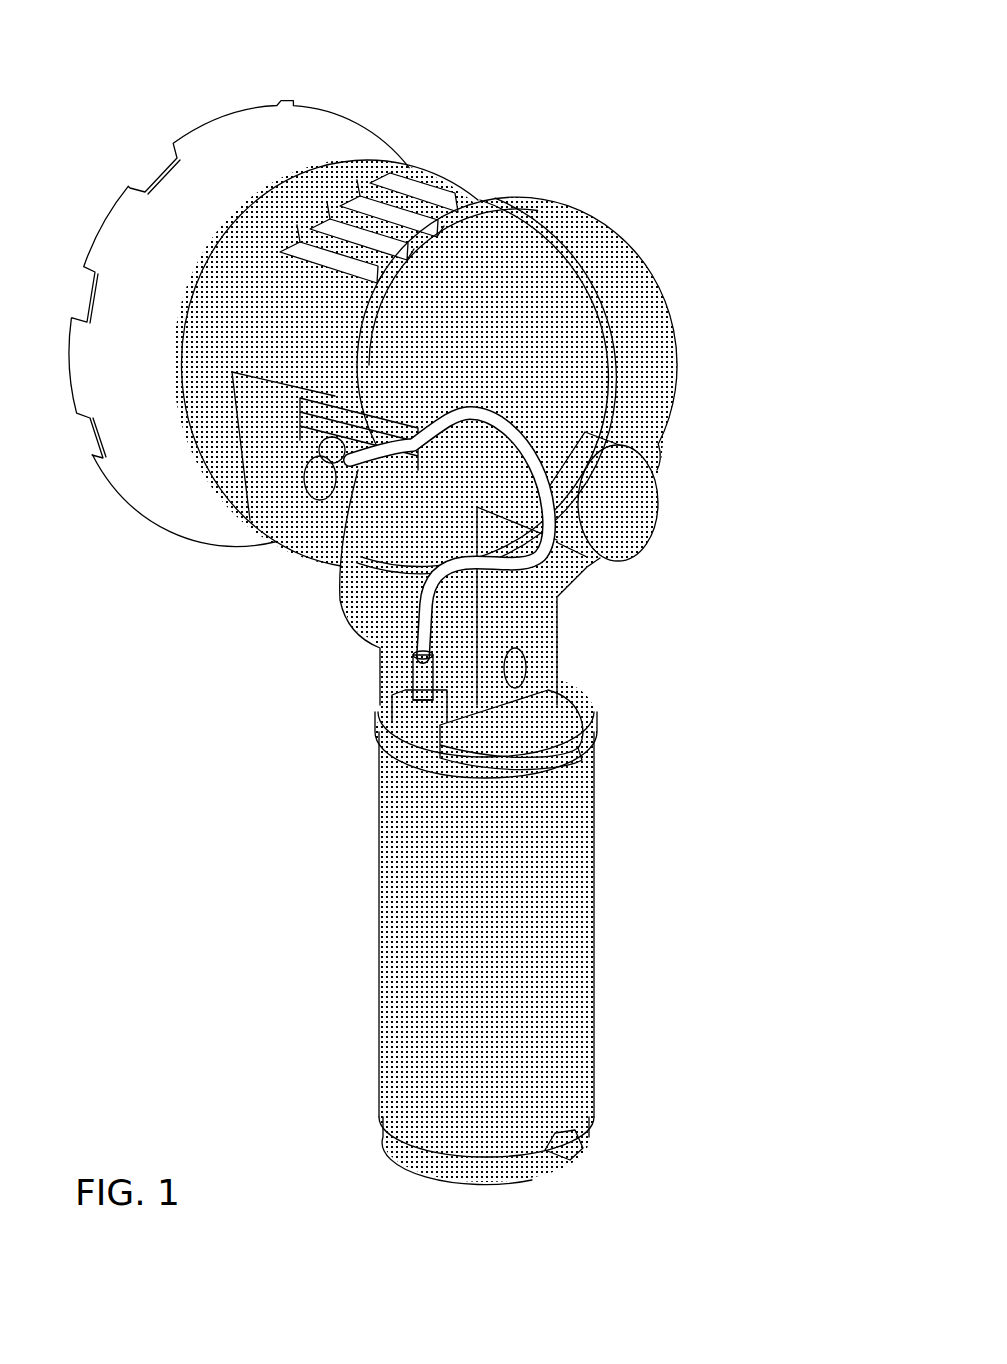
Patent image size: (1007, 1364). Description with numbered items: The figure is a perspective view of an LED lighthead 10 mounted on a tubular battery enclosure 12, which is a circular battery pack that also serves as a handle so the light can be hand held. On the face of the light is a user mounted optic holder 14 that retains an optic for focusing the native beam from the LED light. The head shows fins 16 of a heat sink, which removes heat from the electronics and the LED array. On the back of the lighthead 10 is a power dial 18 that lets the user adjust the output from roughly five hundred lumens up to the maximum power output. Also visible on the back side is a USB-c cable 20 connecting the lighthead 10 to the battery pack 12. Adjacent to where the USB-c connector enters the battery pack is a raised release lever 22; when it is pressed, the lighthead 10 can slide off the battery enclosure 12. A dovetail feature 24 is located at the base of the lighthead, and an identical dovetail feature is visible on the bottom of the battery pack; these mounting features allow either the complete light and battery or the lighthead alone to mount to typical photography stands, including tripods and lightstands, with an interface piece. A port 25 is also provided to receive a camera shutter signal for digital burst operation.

The lighthead 10 is at (449, 655).
The tubular battery enclosure 12 is at (555, 858).
The optic holder 14 is at (322, 128).
The fins 16 is at (440, 210).
The power dial 18 is at (658, 495).
The USB-c cable 20 is at (420, 627).
The release lever 22 is at (550, 703).
The dovetail feature 24 is at (553, 1158).
The port 25 is at (318, 500).